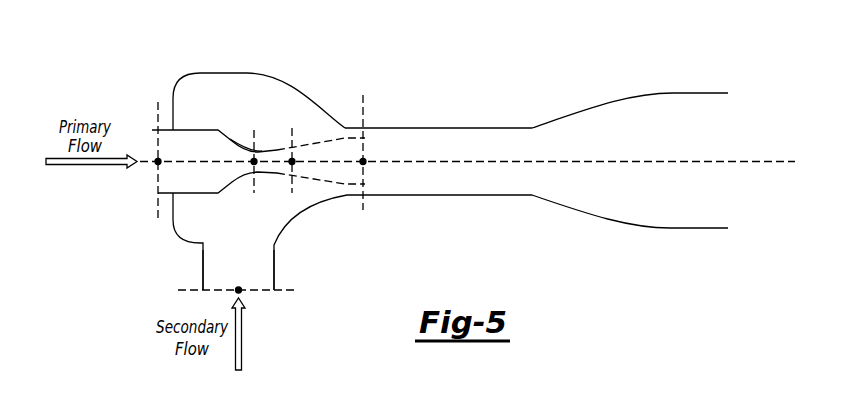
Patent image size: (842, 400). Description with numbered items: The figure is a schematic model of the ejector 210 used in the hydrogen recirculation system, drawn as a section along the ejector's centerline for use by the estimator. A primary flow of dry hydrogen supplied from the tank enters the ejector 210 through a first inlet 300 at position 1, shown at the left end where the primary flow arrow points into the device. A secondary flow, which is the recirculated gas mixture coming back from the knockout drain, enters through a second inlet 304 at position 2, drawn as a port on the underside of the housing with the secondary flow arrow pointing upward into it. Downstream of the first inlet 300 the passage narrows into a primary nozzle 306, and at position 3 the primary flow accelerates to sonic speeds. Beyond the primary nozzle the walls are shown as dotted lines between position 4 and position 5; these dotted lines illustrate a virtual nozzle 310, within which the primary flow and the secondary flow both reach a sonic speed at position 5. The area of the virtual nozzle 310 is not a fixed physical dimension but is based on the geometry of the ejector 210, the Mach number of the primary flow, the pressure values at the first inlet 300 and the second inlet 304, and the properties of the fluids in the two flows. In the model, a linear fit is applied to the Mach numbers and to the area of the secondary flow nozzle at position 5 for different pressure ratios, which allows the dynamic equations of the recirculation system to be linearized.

The ejector 210 is at (167, 60).
The first inlet 300 is at (152, 130).
The primary nozzle 306 is at (228, 135).
The virtual nozzle 310 is at (341, 182).
The second inlet 304 is at (274, 263).
The position 1 is at (151, 161).
The position 2 is at (238, 281).
The position 3 is at (249, 158).
The position 4 is at (287, 157).
The position 5 is at (358, 151).